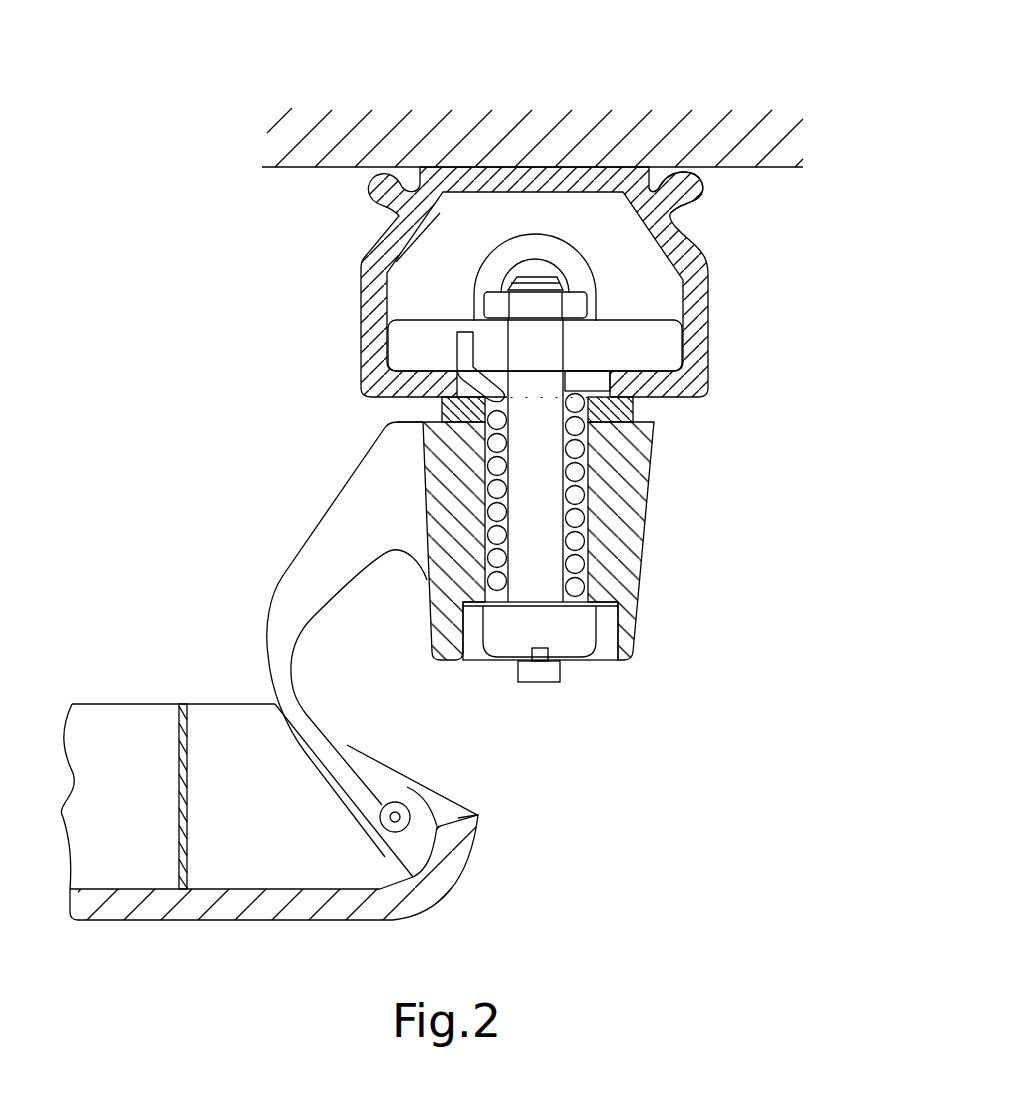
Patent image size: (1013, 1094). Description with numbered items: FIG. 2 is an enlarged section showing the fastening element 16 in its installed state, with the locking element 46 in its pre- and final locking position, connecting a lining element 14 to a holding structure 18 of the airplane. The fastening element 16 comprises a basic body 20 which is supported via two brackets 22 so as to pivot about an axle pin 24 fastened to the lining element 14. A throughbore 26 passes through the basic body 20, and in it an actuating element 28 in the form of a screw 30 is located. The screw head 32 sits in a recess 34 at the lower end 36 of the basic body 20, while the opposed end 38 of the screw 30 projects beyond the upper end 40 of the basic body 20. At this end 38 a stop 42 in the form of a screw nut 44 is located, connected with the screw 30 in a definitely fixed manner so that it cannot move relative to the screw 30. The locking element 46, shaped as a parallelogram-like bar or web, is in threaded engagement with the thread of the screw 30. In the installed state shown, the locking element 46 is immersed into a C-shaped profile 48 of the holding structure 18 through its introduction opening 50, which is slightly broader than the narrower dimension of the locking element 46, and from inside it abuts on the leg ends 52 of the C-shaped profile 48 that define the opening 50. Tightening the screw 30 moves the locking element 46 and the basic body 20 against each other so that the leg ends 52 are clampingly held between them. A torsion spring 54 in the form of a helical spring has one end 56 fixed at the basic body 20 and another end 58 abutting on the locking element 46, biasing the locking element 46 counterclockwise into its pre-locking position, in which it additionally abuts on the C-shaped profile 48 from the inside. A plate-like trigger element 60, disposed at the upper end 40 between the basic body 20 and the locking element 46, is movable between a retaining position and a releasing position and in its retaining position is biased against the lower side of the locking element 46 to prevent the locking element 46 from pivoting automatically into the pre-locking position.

The lining element 14 is at (276, 848).
The fastening element 16 is at (672, 705).
The holding structure 18 is at (760, 224).
The basic body 20 is at (615, 542).
The bracket 22 is at (344, 633).
The axle pin 24 is at (396, 810).
The throughbore 26 is at (577, 462).
The actuating element 28 is at (582, 682).
The screw 30 is at (533, 563).
The screw head 32 is at (567, 636).
The recess 34 is at (607, 638).
The lower end 36 is at (488, 672).
The opposed end 38 is at (565, 255).
The upper end 40 is at (598, 211).
The stop 42 is at (472, 253).
The screw nut 44 is at (535, 307).
The locking element 46 is at (640, 342).
The C-shaped profile 48 is at (682, 238).
The introduction opening 50 is at (588, 383).
The leg ends 52 is at (440, 400).
The torsion spring 54 is at (488, 483).
The spring end 56 is at (600, 593).
The spring end 58 is at (465, 348).
The trigger element 60 is at (400, 410).